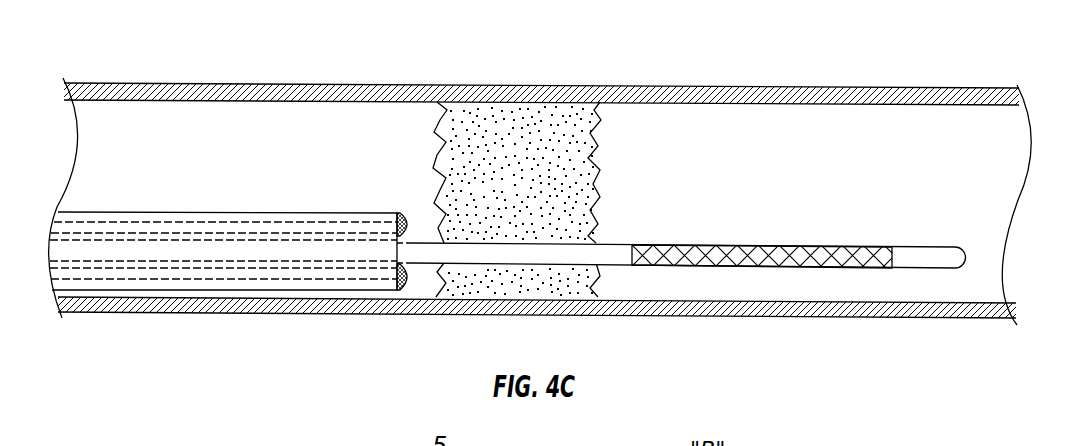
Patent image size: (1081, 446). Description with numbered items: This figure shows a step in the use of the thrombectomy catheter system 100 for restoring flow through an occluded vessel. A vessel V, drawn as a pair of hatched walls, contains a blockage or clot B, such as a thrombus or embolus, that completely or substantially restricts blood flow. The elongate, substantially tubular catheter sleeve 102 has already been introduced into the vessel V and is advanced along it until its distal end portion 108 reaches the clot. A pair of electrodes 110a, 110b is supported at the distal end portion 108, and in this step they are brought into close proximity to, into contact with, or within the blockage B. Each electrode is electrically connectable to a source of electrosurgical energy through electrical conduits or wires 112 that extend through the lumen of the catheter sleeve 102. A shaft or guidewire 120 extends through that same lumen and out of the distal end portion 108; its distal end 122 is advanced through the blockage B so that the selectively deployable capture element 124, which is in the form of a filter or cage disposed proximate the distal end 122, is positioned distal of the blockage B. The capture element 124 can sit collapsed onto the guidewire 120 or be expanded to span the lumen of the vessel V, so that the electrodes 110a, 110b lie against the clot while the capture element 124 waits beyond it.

The thrombectomy catheter system 100 is at (185, 175).
The catheter sleeve 102 is at (172, 210).
The distal end portion 108 is at (283, 212).
The electrode 110a is at (408, 212).
The electrode 110b is at (410, 291).
The electrical conduits or wires 112 is at (541, 59).
The guidewire 120 is at (611, 243).
The distal end 122 is at (938, 247).
The capture element 124 is at (815, 247).
The vessel V is at (198, 83).
The blockage or clot B is at (598, 200).